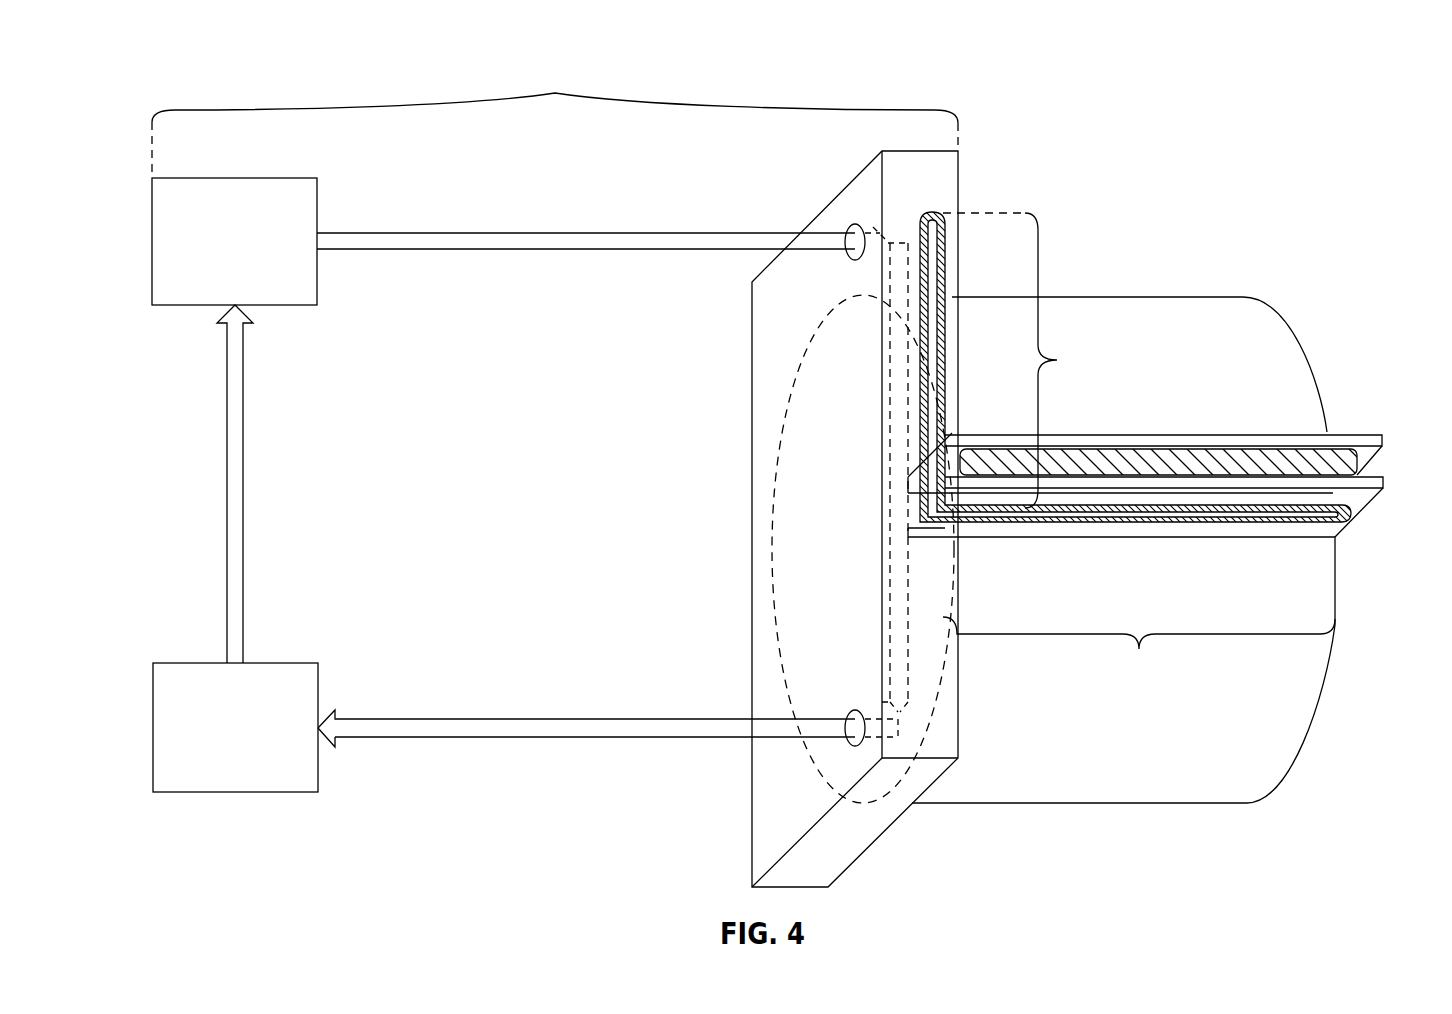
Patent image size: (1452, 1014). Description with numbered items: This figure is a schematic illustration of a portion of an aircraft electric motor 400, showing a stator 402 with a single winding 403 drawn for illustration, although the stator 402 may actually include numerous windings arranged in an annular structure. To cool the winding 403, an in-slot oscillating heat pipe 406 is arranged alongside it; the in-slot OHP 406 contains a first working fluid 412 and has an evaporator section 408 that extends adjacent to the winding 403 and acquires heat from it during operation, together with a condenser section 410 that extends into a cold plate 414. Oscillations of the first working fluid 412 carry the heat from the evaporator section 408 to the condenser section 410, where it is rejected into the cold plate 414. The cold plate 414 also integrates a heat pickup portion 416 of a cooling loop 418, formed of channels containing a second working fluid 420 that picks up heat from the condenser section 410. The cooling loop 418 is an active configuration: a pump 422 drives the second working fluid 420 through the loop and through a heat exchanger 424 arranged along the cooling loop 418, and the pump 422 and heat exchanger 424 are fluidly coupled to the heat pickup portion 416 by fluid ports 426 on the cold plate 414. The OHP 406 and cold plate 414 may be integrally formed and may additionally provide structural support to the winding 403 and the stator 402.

The aircraft electric motor 400 is at (160, 52).
The stator 402 is at (1050, 790).
The winding 403 is at (1202, 462).
The in-slot oscillating heat pipe 406 is at (1363, 437).
The evaporator section 408 is at (1139, 654).
The condenser section 410 is at (1025, 360).
The first working fluid 412 is at (1238, 520).
The cold plate 414 is at (850, 848).
The heat pickup portion 416 is at (896, 470).
The cooling loop 418 is at (555, 118).
The second working fluid 420 is at (537, 740).
The pump 422 is at (230, 778).
The heat exchanger 424 is at (168, 249).
The fluid port 426 is at (852, 226).